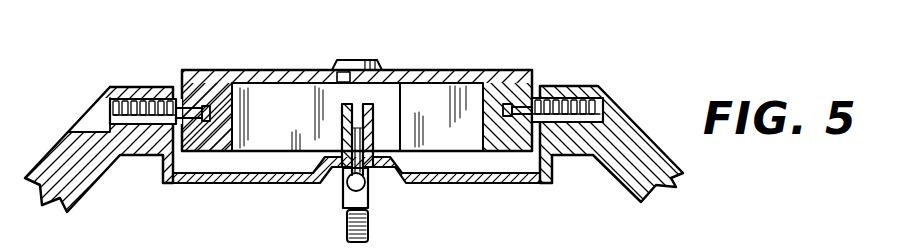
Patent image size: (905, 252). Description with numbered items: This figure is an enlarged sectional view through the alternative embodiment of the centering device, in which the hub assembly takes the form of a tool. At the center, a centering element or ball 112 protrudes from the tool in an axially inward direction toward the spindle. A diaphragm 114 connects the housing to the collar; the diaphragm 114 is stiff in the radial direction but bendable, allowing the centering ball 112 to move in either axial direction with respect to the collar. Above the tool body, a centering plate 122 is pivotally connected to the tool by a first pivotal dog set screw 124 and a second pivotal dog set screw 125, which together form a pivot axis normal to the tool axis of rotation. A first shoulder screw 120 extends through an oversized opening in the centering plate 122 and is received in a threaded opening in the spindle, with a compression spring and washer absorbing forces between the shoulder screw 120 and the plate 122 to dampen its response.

The centering ball 112 is at (351, 178).
The diaphragm 114 is at (208, 184).
The first shoulder screw 120 is at (371, 200).
The centering plate 122 is at (297, 70).
The first pivotal dog set screw 124 is at (110, 108).
The second pivotal dog set screw 125 is at (609, 110).